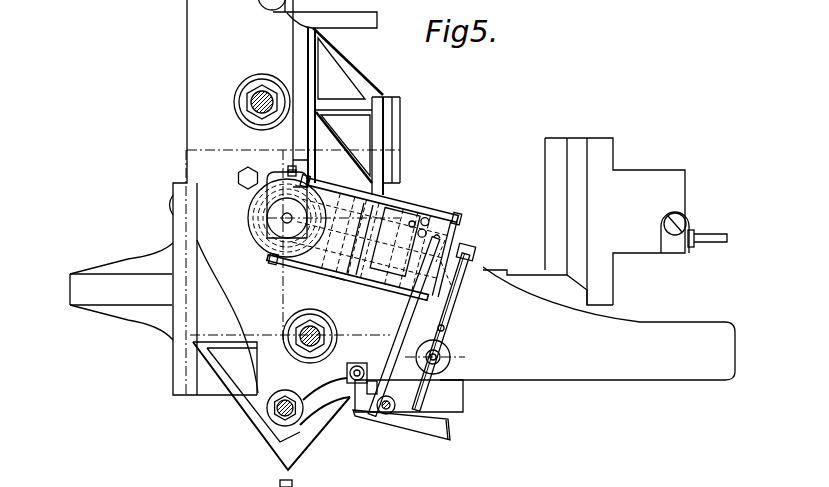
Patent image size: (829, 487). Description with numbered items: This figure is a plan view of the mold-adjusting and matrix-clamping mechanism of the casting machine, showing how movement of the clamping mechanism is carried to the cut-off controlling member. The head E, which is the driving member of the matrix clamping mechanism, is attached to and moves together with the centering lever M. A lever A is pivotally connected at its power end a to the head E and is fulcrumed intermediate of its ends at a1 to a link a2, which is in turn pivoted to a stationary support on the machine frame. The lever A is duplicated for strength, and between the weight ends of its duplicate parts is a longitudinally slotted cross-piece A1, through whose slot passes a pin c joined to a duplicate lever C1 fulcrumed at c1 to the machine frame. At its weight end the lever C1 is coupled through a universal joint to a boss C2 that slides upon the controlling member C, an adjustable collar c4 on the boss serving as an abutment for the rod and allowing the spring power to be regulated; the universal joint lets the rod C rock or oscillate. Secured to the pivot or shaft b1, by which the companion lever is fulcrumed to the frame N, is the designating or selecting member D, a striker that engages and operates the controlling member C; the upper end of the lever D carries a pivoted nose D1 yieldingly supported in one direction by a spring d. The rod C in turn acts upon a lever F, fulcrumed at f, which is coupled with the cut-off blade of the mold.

The power end of lever A a is at (290, 168).
The fulcrum of lever A a1 is at (370, 195).
The link a2 is at (330, 276).
The centering lever M is at (298, 173).
The head E is at (262, 217).
The lever A is at (369, 241).
The longitudinally slotted cross-piece A1 is at (445, 252).
The fulcrum of lever F f is at (365, 298).
The pin c is at (472, 266).
The controlling member C is at (383, 420).
The duplicate lever C1 is at (450, 303).
The fulcrum of lever C1 c1 is at (443, 329).
The boss C2 is at (377, 417).
The adjustable collar c4 is at (360, 392).
The lever F is at (450, 357).
The designating or selecting member D is at (420, 406).
The projecting piece or nose D1 is at (420, 430).
The spring d is at (449, 432).
The pivot or shaft b1 is at (347, 381).
The frame N is at (587, 323).